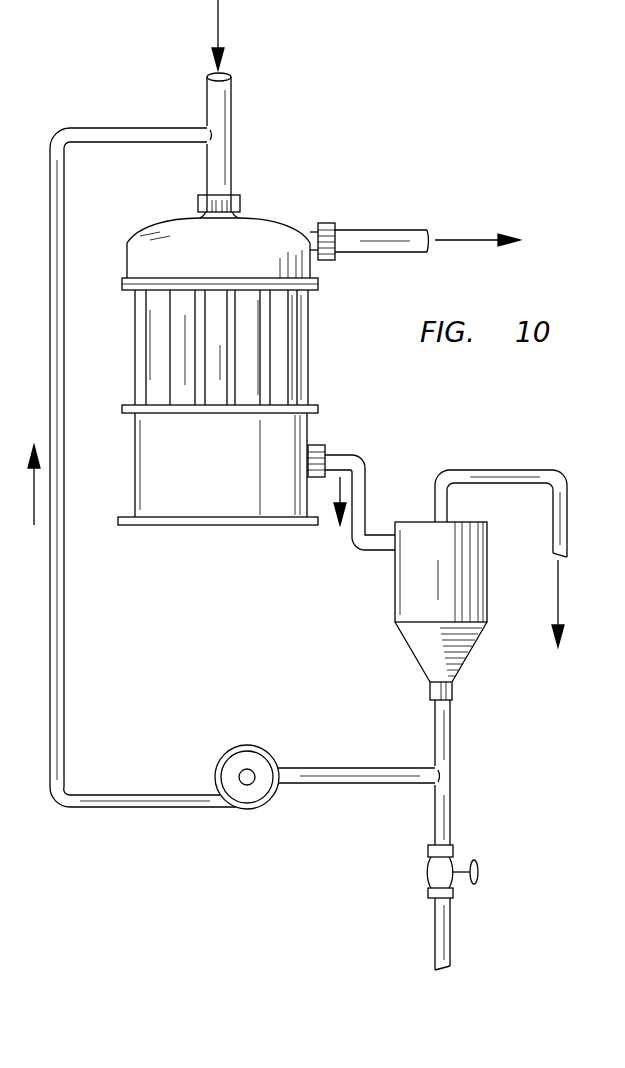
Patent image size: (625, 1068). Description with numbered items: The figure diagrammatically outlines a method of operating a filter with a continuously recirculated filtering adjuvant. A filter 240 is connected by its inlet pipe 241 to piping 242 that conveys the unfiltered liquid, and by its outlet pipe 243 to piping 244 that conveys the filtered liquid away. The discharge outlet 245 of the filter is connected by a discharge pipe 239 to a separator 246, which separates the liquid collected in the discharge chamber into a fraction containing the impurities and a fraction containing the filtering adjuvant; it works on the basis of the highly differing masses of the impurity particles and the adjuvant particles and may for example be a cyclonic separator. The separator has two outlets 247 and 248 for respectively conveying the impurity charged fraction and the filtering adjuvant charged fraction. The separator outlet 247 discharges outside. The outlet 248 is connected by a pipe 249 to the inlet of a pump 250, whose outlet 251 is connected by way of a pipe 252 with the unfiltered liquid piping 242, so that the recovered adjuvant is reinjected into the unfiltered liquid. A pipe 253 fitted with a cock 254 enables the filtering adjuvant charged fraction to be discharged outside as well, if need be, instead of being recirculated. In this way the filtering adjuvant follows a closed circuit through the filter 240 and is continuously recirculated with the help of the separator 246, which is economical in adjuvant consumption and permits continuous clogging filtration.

The discharge pipe 239 is at (357, 490).
The filter 240 is at (132, 240).
The inlet pipe 241 is at (205, 216).
The piping 242 is at (232, 97).
The outlet pipe 243 is at (317, 233).
The piping 244 is at (378, 233).
The discharge outlet 245 is at (317, 457).
The separator 246 is at (403, 587).
The outlet 247 is at (478, 478).
The outlet 248 is at (437, 733).
The pipe 249 is at (315, 775).
The pump 250 is at (233, 757).
The outlet 251 is at (133, 798).
The pipe 252 is at (58, 580).
The pipe 253 is at (437, 817).
The cock 254 is at (428, 875).